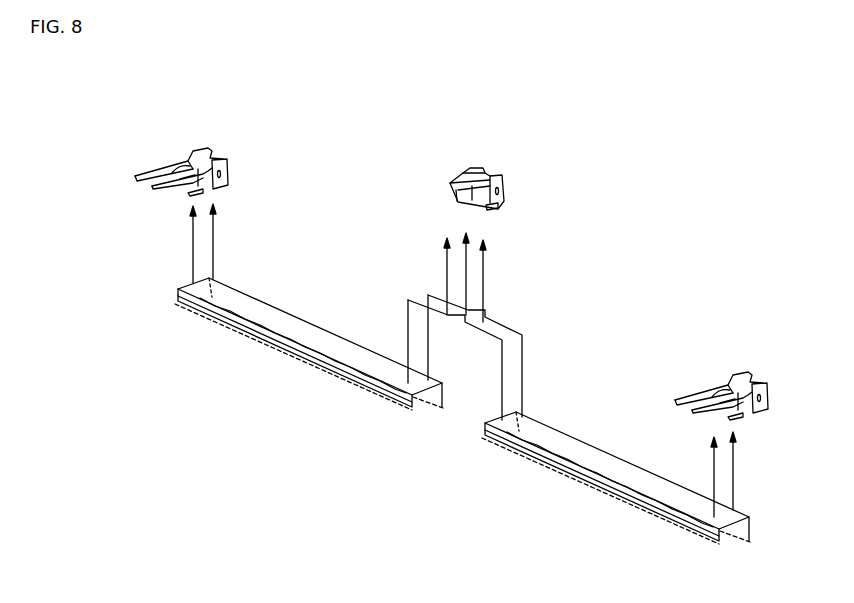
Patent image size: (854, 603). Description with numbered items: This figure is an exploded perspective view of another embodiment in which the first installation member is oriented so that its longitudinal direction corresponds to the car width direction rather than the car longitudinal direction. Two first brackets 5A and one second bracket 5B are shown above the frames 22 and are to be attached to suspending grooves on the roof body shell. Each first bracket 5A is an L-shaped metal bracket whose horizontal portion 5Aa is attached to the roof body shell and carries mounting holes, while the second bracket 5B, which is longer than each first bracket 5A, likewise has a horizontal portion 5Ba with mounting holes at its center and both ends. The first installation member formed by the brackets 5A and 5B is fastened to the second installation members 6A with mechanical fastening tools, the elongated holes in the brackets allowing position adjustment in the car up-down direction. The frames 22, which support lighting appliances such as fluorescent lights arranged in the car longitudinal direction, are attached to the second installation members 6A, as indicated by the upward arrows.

The frame 22 is at (298, 325).
The first bracket 5A is at (165, 170).
The horizontal portion 5Aa is at (227, 167).
The second bracket 5B is at (479, 166).
The horizontal portion 5Ba is at (502, 182).
The second installation member 6A is at (218, 195).